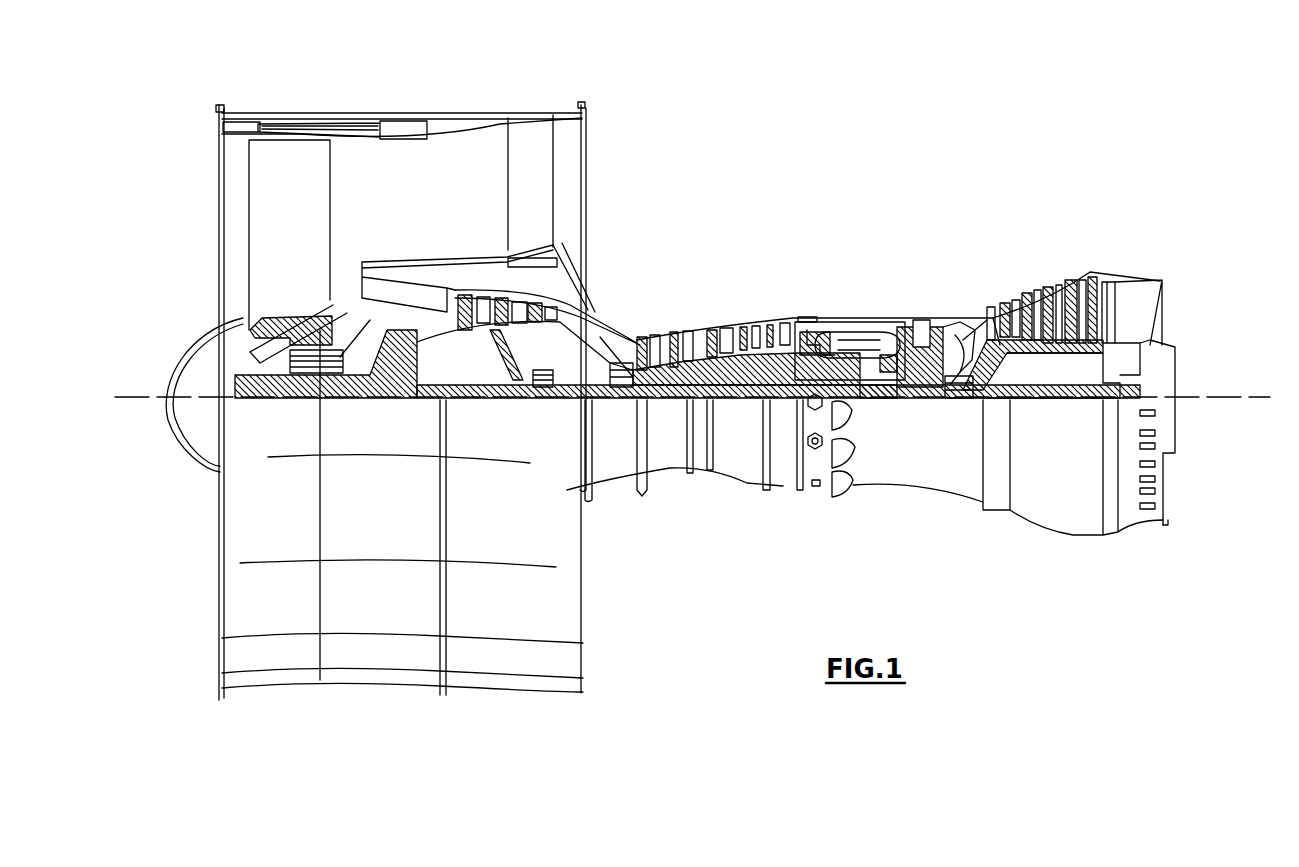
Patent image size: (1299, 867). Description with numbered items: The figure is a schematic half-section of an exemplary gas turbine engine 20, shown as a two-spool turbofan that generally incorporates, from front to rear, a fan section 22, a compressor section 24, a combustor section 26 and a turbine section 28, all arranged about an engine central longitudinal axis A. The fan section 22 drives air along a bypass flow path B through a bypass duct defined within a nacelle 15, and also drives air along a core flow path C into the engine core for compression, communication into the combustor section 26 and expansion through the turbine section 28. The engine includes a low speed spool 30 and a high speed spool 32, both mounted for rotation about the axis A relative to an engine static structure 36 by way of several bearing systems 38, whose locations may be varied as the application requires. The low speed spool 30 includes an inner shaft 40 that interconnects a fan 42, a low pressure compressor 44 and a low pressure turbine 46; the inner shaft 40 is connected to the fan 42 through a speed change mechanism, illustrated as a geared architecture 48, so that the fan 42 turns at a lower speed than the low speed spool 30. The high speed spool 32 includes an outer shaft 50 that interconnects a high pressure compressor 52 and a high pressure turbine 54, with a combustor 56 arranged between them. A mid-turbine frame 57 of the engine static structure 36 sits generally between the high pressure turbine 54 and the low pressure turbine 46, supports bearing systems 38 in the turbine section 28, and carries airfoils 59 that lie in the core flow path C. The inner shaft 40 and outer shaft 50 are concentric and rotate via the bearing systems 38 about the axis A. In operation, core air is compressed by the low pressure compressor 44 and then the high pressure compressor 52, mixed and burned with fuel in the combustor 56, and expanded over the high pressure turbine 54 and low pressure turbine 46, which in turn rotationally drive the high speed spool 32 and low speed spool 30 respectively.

The gas turbine engine 20 is at (860, 163).
The fan section 22 is at (333, 103).
The nacelle 15 is at (400, 122).
The fan 42 is at (310, 245).
The low pressure compressor 44 is at (500, 307).
The compressor section 24 is at (634, 298).
The high pressure compressor 52 is at (710, 367).
The combustor section 26 is at (855, 298).
The high speed spool 32 is at (790, 345).
The combustor 56 is at (857, 340).
The high pressure turbine 54 is at (921, 320).
The mid-turbine frame 57 is at (963, 308).
The turbine section 28 is at (1005, 256).
The low pressure turbine 46 is at (1048, 283).
The airfoils 59 is at (992, 353).
The geared architecture 48 is at (405, 382).
The bearing systems 38 is at (538, 382).
The inner shaft 40 is at (597, 400).
The low speed spool 30 is at (740, 405).
The engine static structure 36 is at (778, 490).
The outer shaft 50 is at (868, 390).
The engine central longitudinal axis A is at (1252, 397).
The bypass flow path B is at (368, 188).
The core flow path C is at (403, 296).